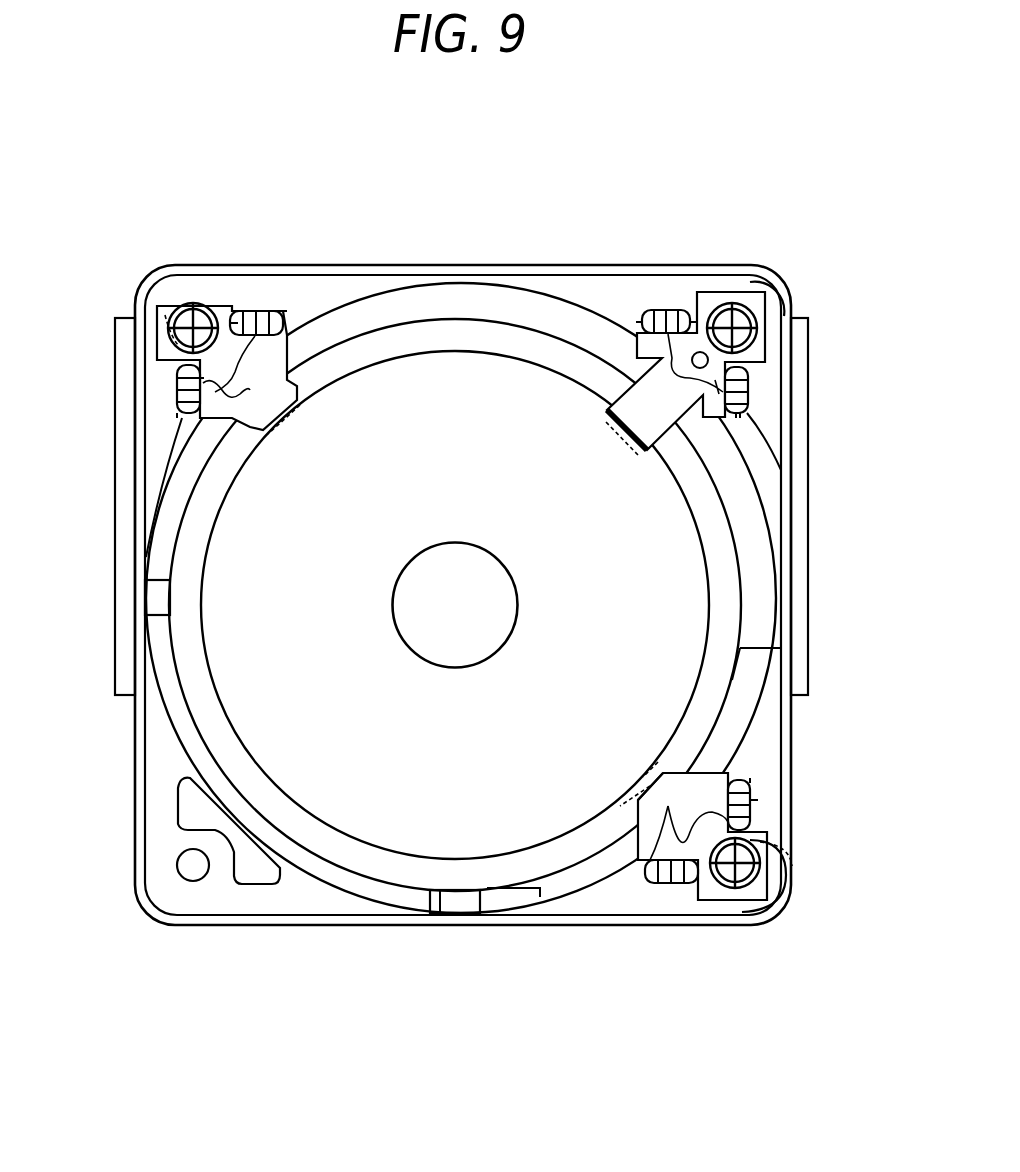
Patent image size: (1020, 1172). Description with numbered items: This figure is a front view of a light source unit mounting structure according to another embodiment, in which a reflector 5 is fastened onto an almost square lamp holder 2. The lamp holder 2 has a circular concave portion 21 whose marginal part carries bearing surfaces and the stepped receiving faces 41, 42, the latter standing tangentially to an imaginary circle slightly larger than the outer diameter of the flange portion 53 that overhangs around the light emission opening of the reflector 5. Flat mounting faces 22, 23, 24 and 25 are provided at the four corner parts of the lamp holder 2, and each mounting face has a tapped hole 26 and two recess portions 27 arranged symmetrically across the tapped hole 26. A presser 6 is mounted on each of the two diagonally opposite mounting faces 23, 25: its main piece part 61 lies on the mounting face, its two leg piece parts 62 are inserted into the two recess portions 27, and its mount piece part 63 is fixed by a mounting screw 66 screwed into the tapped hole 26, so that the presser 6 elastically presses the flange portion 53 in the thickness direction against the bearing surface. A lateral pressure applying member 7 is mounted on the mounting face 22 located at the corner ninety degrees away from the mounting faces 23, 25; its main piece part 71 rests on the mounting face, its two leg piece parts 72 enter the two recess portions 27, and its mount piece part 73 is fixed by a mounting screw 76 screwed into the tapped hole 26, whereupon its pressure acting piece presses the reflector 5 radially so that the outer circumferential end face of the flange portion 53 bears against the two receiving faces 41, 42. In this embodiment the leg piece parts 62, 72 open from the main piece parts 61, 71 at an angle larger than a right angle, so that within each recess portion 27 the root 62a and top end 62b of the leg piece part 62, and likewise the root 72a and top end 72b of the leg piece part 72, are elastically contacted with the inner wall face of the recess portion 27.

The lamp holder 2 is at (530, 268).
The reflector 5 is at (378, 830).
The presser 6 is at (218, 304).
The lateral pressure applying member 7 is at (711, 291).
The circular concave portion 21 is at (390, 290).
The mounting face 22 is at (782, 310).
The mounting face 23 is at (150, 298).
The mounting face 24 is at (217, 880).
The mounting face 25 is at (765, 893).
The tapped hole 26 is at (185, 305).
The recess portion 27 is at (276, 320).
The receiving face 41 is at (172, 600).
The receiving face 42 is at (460, 888).
The flange portion 53 is at (466, 330).
The main piece part 61 is at (294, 378).
The leg piece part 62 is at (262, 316).
The root 62a is at (465, 598).
The top end 62b is at (250, 314).
The mount piece part 63 is at (160, 346).
The mounting screw 66 is at (178, 300).
The main piece part 71 is at (642, 452).
The leg piece part 72 is at (658, 314).
The root 72a is at (681, 376).
The top end 72b is at (678, 314).
The mount piece part 73 is at (756, 291).
The mounting screw 76 is at (768, 298).